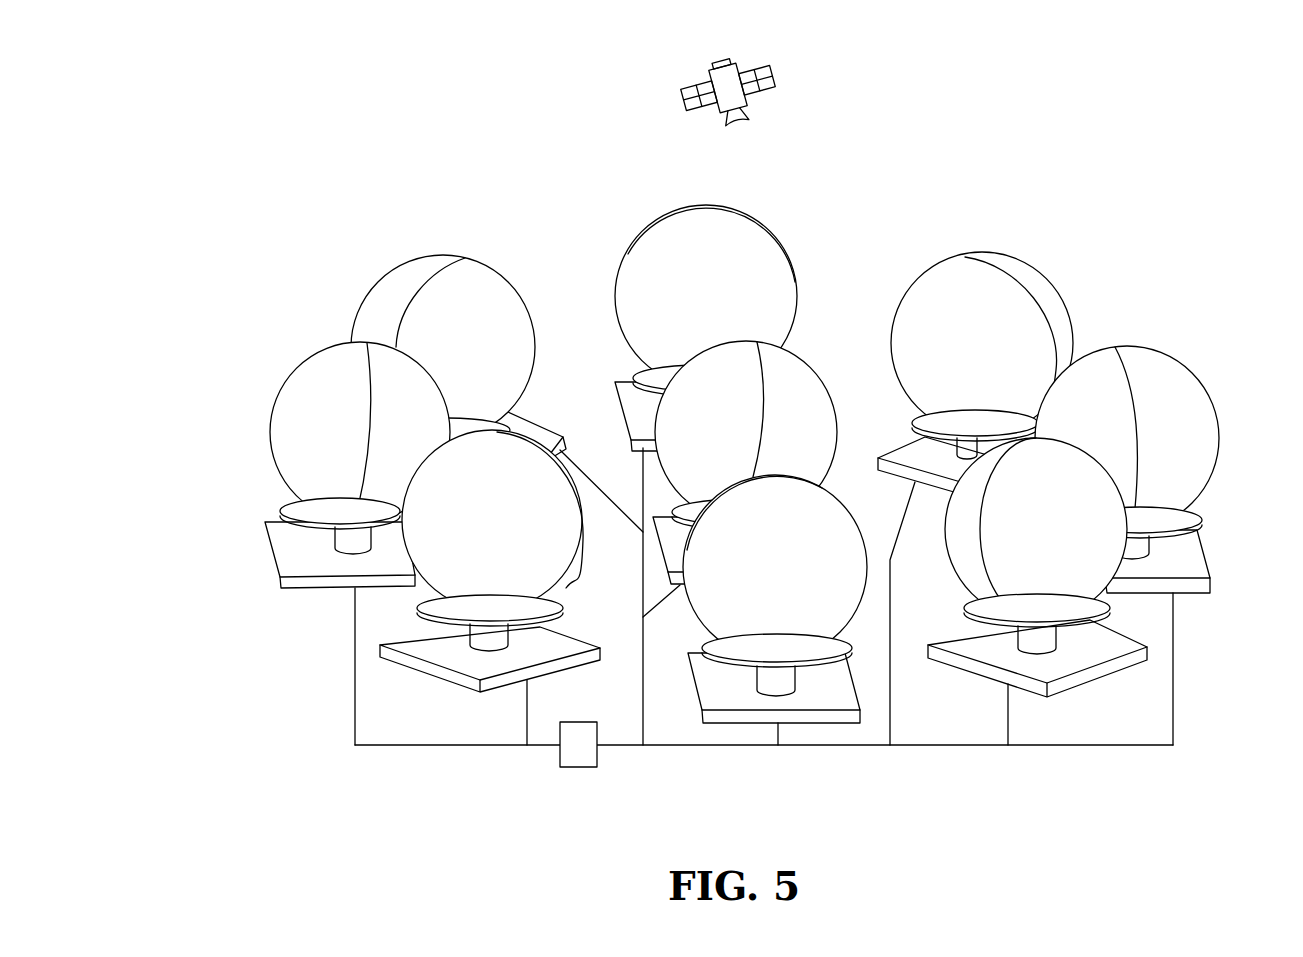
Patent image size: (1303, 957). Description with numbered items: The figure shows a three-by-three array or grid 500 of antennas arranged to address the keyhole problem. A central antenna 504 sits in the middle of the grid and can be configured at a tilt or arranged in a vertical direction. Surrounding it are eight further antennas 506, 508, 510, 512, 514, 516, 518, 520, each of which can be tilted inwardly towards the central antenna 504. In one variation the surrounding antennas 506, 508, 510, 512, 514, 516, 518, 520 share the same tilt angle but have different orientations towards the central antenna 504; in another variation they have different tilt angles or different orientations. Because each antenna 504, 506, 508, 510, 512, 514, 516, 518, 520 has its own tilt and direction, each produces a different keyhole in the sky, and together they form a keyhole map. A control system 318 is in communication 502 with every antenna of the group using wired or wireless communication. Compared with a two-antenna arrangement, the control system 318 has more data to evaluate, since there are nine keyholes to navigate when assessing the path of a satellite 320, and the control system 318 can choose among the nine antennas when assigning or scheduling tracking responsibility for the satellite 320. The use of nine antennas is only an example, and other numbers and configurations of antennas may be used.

The array or grid of antennas 500 is at (208, 202).
The communication 502 is at (935, 747).
The central antenna 504 is at (806, 360).
The antenna 506 is at (653, 223).
The antenna 508 is at (1052, 281).
The antenna 510 is at (1185, 364).
The antenna 512 is at (962, 587).
The antenna 514 is at (833, 478).
The antenna 516 is at (568, 578).
The antenna 518 is at (312, 353).
The antenna 520 is at (409, 263).
The control system 318 is at (580, 770).
The satellite 320 is at (761, 70).